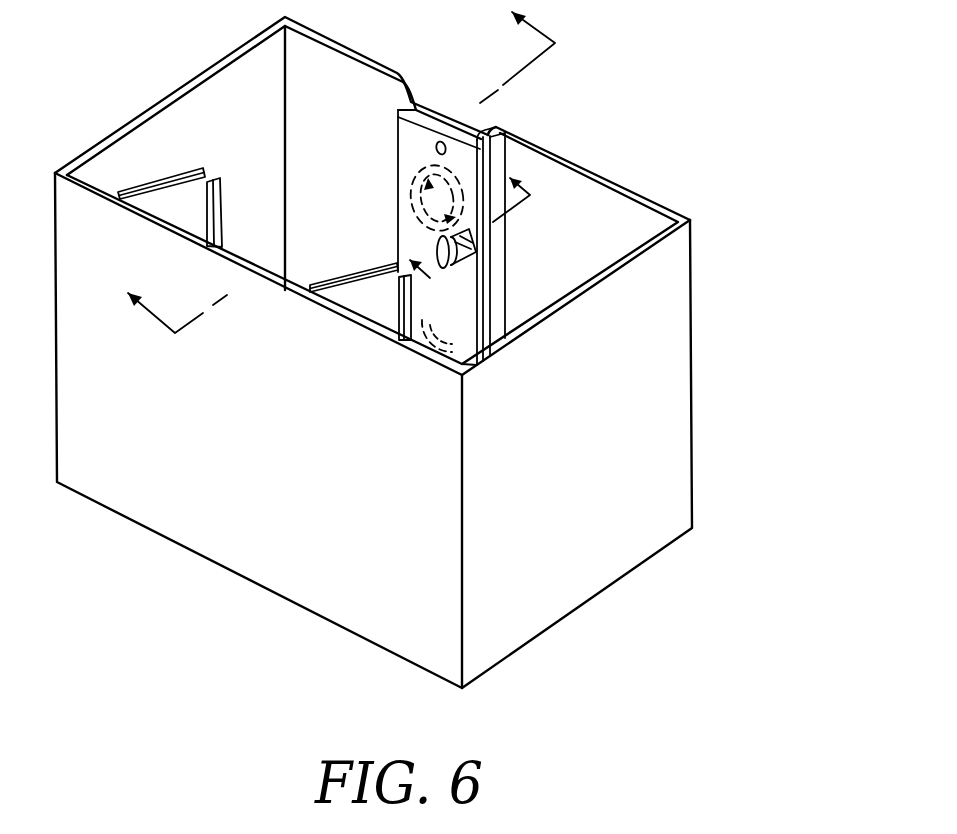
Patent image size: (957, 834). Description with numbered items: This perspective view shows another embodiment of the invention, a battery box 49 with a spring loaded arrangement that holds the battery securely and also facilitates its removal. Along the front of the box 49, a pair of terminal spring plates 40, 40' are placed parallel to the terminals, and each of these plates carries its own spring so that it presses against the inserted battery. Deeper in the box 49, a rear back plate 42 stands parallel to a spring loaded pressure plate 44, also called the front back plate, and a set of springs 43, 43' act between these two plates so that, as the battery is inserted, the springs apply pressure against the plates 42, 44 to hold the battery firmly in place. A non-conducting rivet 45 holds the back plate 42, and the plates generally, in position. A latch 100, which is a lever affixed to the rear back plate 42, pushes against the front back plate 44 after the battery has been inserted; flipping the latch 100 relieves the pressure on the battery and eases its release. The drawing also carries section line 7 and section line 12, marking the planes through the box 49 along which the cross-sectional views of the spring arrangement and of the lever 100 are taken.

The section line 7— 7 is at (335, 166).
The section line 12— 12 is at (472, 214).
The terminal spring plate 40 is at (309, 228).
The terminal spring plate 40' is at (440, 161).
The back plate 42 is at (452, 170).
The spring 43 is at (554, 201).
The spring 43' is at (507, 390).
The pressure plate 44 is at (492, 132).
The non-conducting rivet 45 is at (436, 147).
The box 49 is at (610, 462).
The latch 100 is at (478, 260).